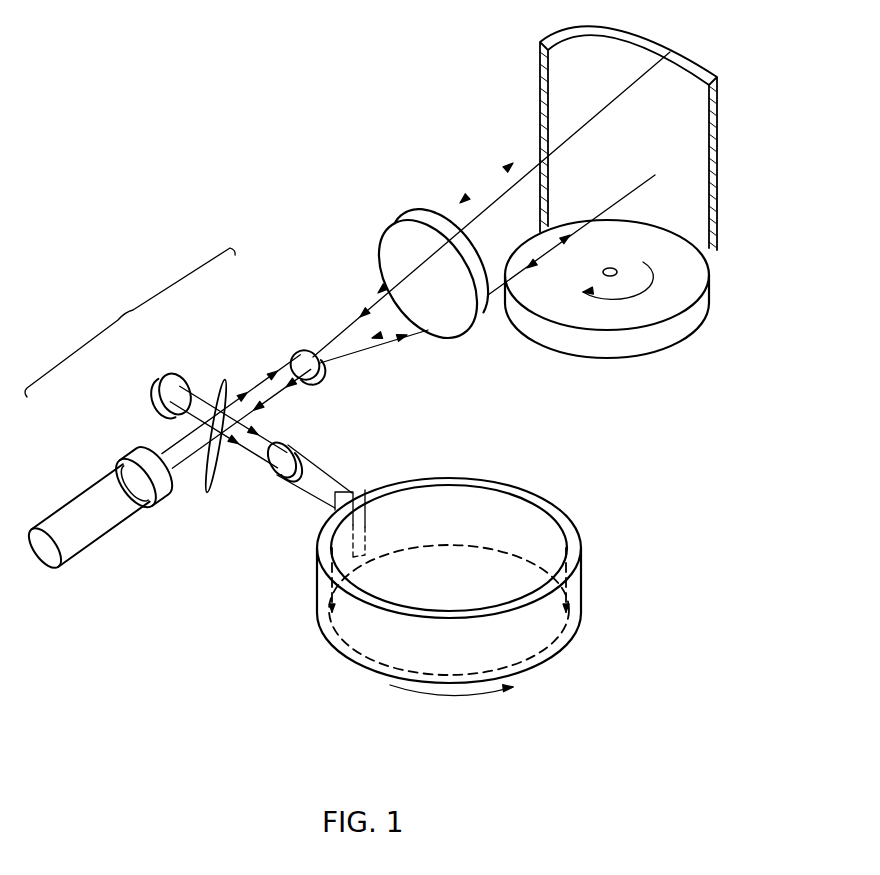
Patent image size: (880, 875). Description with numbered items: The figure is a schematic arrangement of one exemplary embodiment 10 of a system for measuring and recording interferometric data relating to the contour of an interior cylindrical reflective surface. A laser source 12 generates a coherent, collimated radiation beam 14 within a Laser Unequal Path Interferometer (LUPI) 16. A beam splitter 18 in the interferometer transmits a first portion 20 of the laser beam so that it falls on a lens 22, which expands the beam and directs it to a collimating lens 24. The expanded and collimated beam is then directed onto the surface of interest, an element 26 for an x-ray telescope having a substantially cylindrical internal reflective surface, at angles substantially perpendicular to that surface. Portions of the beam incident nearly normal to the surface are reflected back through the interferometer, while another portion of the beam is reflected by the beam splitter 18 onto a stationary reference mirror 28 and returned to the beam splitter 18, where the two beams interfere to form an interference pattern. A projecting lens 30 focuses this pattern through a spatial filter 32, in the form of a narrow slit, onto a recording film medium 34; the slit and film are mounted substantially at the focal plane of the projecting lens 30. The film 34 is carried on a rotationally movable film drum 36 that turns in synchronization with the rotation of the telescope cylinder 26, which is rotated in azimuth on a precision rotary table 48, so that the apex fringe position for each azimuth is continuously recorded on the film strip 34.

The exemplary embodiment 10 is at (268, 208).
The laser source 12 is at (70, 566).
The radiation beam 14 is at (172, 442).
The Laser Unequal Path Interferometer (LUPI) 16 is at (130, 322).
The beam splitter 18 is at (213, 473).
The first portion of the laser beam 20 is at (272, 400).
The lens 22 is at (298, 350).
The collimating lens 24 is at (380, 267).
The element for an x-ray telescope 26 is at (543, 77).
The stationary reference mirror 28 is at (156, 386).
The projecting lens 30 is at (292, 448).
The spatial filter 32 is at (367, 528).
The recording film medium 34 is at (550, 520).
The film drum 36 is at (465, 696).
The precision rotary table 48 is at (640, 343).